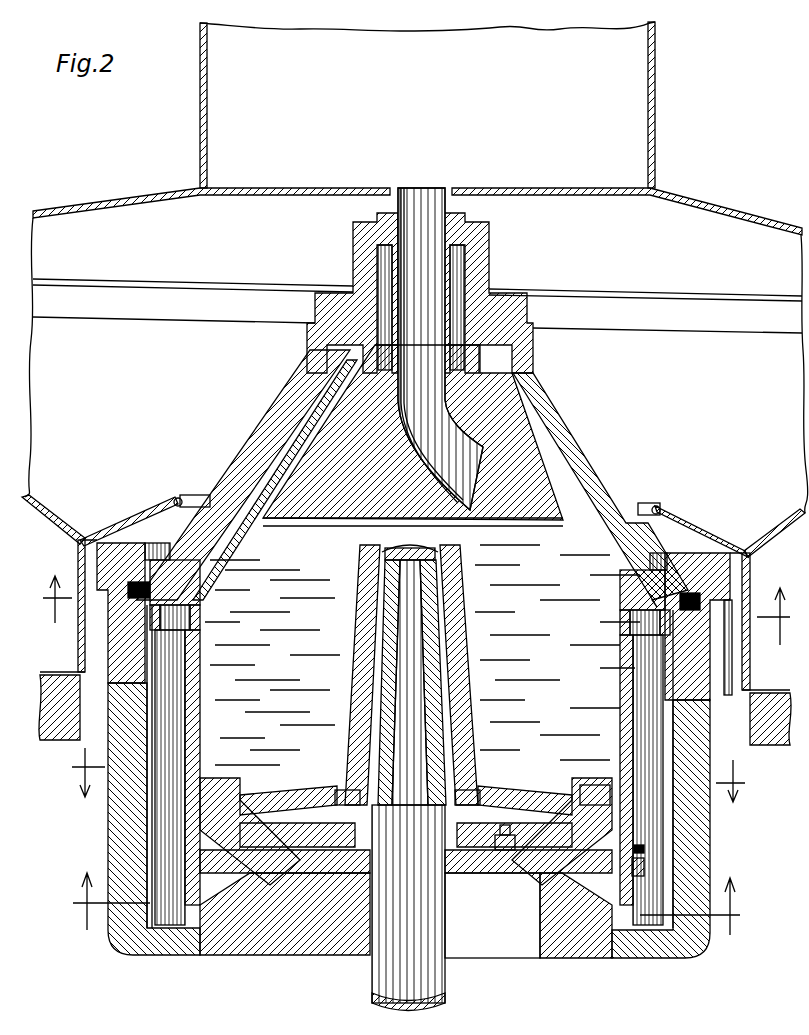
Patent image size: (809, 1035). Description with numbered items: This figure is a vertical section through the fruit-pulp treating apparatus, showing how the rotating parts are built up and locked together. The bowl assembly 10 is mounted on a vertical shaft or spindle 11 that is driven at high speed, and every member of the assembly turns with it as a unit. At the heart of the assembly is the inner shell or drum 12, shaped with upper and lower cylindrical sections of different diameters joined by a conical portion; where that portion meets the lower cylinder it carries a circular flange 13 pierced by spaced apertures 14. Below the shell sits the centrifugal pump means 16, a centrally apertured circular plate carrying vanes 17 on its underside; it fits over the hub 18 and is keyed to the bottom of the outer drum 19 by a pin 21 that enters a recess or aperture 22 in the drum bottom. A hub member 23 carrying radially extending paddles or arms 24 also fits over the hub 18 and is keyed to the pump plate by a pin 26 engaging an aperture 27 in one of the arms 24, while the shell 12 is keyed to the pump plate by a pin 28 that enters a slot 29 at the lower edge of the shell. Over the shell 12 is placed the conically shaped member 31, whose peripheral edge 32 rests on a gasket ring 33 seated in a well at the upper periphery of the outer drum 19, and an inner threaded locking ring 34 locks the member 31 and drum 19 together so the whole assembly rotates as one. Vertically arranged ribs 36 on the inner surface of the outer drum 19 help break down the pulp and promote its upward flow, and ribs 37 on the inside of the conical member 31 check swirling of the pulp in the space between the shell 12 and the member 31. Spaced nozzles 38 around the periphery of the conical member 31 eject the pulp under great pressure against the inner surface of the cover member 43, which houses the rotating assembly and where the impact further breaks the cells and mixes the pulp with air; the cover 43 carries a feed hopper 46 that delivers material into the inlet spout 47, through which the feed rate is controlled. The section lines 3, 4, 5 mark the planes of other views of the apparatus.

The section line 3- 3 is at (407, 775).
The section line 4- 4 is at (412, 610).
The section line 5- 5 is at (405, 904).
The bowl assembly 10 is at (98, 816).
The vertical shaft or spindle 11 is at (380, 992).
The inner shell or drum 12 is at (330, 432).
The circular flange 13 is at (200, 612).
The apertures 14 is at (190, 626).
The centrifugal pump means 16 is at (300, 792).
The vanes 17 is at (340, 800).
The hub 18 is at (452, 659).
The outer drum 19 is at (700, 818).
The pin 21 is at (500, 852).
The recess or aperture 22 is at (515, 852).
The hub member 23 is at (372, 584).
The paddles or arms 24 is at (422, 655).
The pin 26 is at (590, 810).
The aperture 27 is at (605, 795).
The pin 28 is at (644, 848).
The slot 29 is at (644, 868).
The conically shaped member 31 is at (268, 445).
The peripheral edge 32 is at (632, 585).
The gasket ring 33 is at (645, 614).
The inner threaded locking ring 34 is at (112, 540).
The ribs 36 is at (672, 705).
The ribs 37 is at (335, 407).
The nozzles 38 is at (200, 496).
The cover member 43 is at (97, 203).
The feed hopper 46 is at (655, 100).
The inlet spout 47 is at (385, 522).